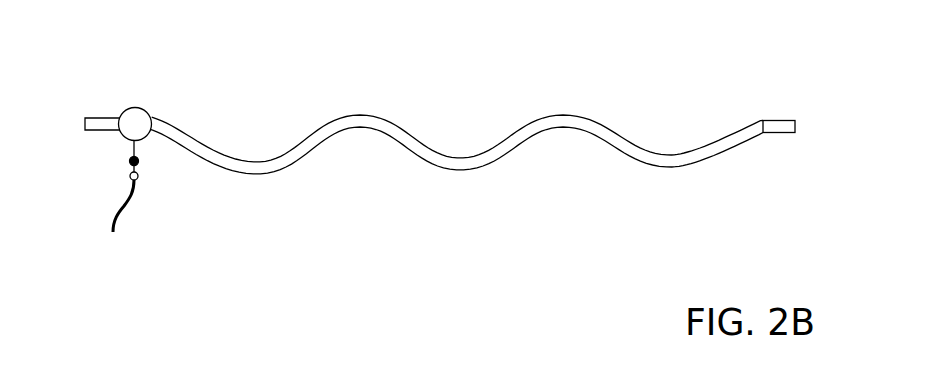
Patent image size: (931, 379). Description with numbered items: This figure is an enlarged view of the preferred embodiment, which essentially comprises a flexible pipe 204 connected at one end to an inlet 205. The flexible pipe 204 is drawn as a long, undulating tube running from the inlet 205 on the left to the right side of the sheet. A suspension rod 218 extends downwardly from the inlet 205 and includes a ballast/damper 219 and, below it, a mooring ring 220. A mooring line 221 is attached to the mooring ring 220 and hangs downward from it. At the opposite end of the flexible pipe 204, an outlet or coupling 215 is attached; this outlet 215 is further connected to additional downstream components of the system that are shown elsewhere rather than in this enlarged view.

The flexible pipe 204 is at (513, 135).
The inlet 205 is at (142, 108).
The outlet coupling 215 is at (777, 119).
The suspension rod 218 is at (132, 148).
The ballast/damper 219 is at (130, 166).
The mooring ring 220 is at (139, 176).
The mooring line 221 is at (121, 209).